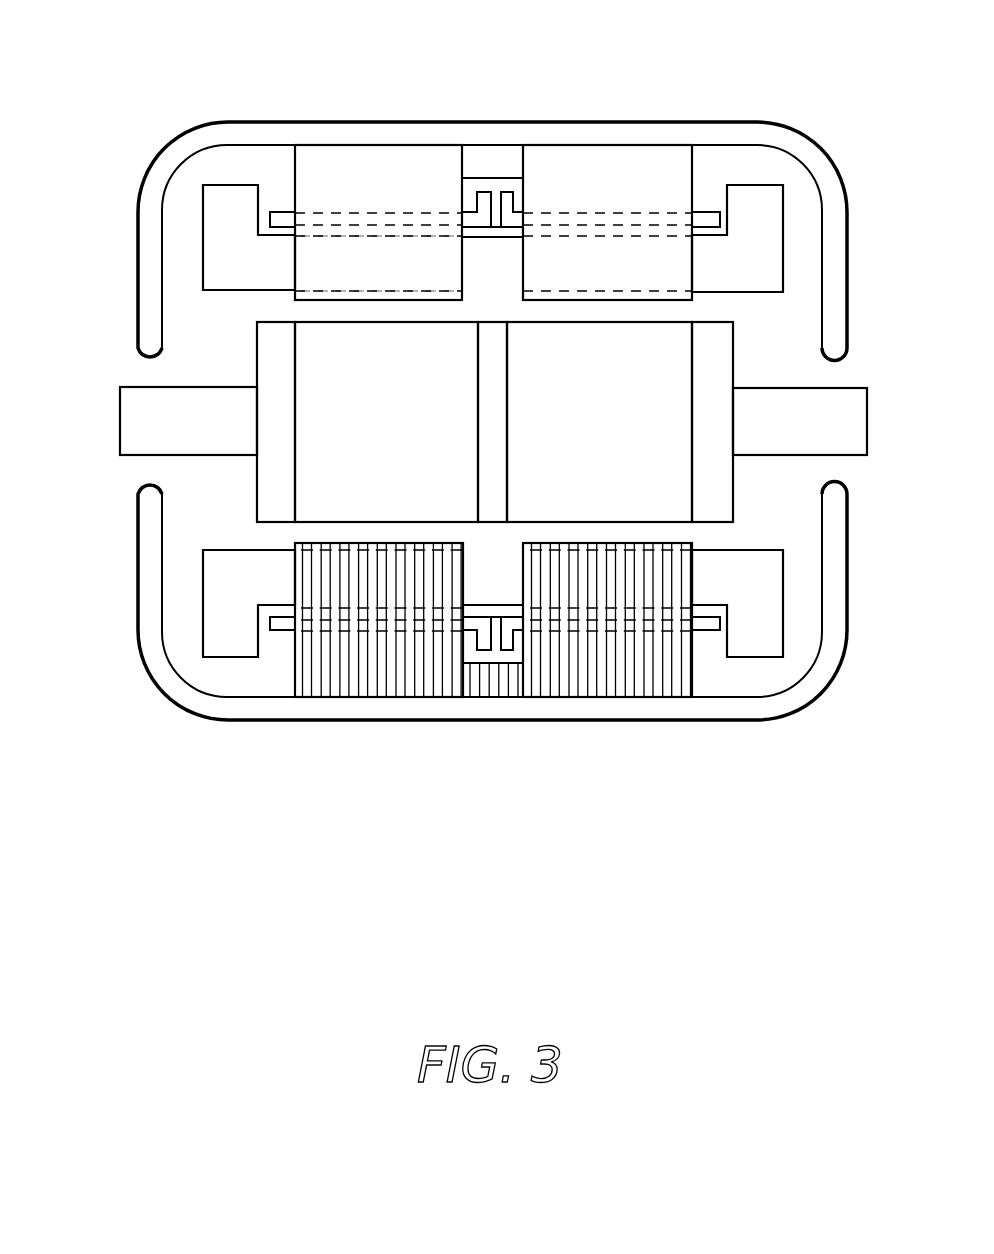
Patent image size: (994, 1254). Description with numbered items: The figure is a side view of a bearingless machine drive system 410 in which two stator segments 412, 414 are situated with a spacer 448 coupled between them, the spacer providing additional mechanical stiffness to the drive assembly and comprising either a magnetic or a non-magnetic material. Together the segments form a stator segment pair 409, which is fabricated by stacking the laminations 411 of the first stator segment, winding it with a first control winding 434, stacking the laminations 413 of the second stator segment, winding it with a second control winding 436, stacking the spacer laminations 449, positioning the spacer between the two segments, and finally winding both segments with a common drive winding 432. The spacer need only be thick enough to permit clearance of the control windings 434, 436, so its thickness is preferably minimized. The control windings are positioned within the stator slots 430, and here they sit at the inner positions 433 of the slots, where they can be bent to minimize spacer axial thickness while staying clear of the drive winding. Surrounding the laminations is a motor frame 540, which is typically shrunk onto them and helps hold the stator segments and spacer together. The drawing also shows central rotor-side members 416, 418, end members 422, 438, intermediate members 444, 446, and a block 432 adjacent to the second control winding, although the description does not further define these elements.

The stator segment pair 409 is at (708, 700).
The bearingless machine drive system 410 is at (698, 72).
The laminations of the first stator segment 411 is at (367, 695).
The stator segment 412 is at (361, 192).
The laminations of the second stator segment 413 is at (575, 693).
The stator segment 414 is at (588, 192).
The first proof mass 416 is at (363, 430).
The second proof mass 418 is at (583, 430).
The left anchor tab 422 is at (173, 437).
The stator slots 430 is at (375, 213).
The drive winding 432 is at (763, 203).
The inner positions 433 is at (388, 237).
The first control winding 434 is at (273, 210).
The second control winding 436 is at (707, 216).
The right beam 438 is at (712, 490).
The left beam 444 is at (262, 493).
The central beam 446 is at (493, 343).
The spacer 448 is at (495, 160).
The spacer laminations 449 is at (497, 693).
The motor frame 540 is at (146, 343).